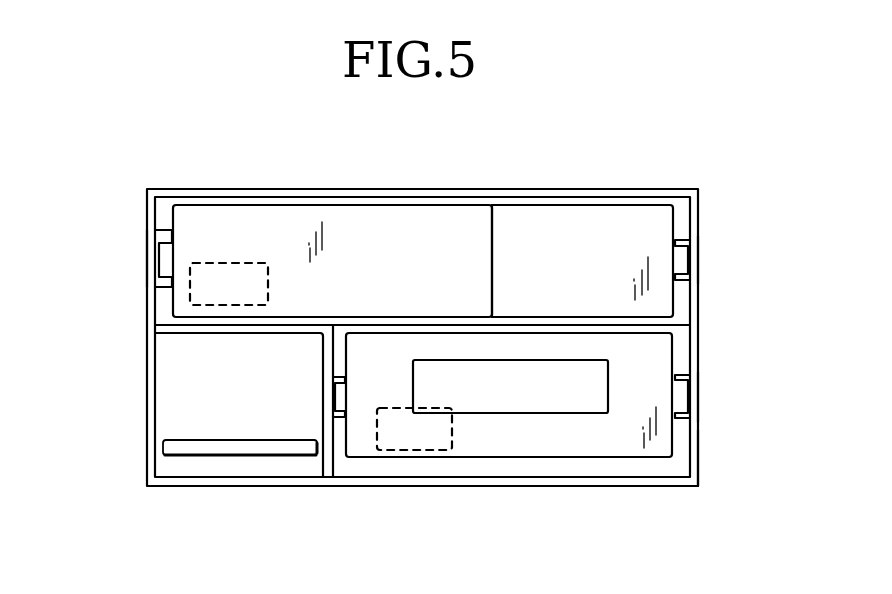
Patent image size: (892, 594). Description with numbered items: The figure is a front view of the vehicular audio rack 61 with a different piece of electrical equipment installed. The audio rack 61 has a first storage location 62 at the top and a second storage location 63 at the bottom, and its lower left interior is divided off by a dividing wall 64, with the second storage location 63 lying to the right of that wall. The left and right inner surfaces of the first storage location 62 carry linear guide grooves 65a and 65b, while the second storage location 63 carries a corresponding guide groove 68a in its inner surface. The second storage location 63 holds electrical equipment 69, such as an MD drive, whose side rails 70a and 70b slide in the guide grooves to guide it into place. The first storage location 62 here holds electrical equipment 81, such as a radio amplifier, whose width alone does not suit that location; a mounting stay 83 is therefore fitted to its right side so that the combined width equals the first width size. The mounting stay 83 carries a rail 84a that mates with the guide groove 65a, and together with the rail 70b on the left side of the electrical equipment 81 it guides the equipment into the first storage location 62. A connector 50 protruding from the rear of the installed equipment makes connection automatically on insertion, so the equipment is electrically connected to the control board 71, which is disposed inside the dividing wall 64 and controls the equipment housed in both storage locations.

The connector 50 is at (245, 262).
The vehicular audio rack 61 is at (609, 186).
The first storage location 62 is at (679, 210).
The second storage location 63 is at (681, 472).
The dividing wall 64 is at (190, 338).
The first guide 65a is at (694, 268).
The first guide 65b is at (152, 268).
The second guide 68a is at (694, 405).
The second electrical equipment 69 is at (612, 457).
The rail 70a is at (694, 391).
The rail 70b is at (152, 258).
The control board 71 is at (215, 460).
The third electrical equipment 81 is at (362, 220).
The mounting stay 83 is at (541, 218).
The rail 84a is at (693, 253).